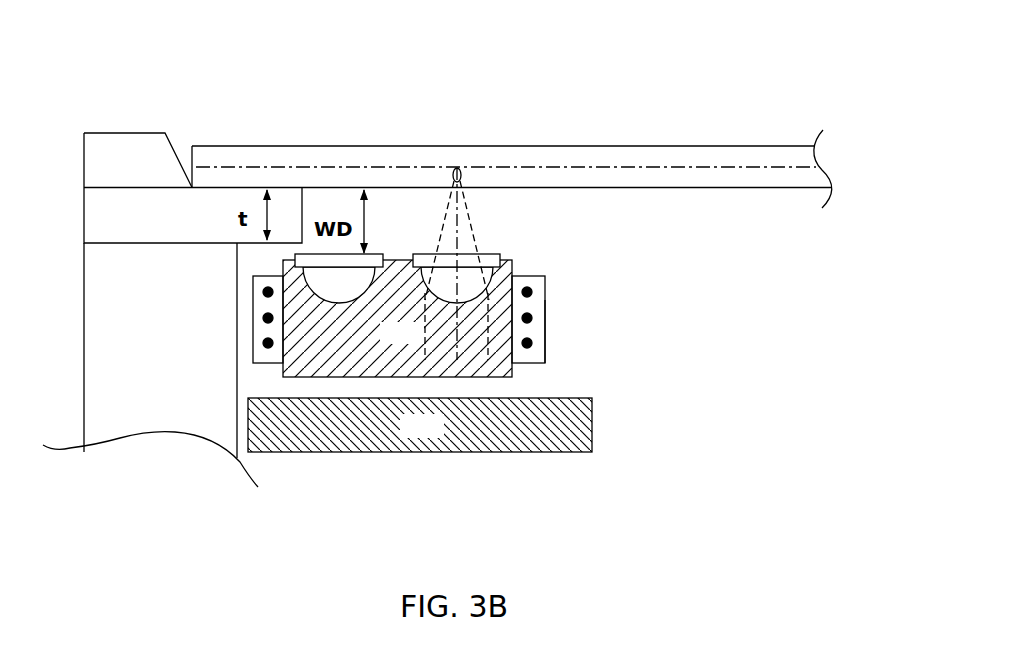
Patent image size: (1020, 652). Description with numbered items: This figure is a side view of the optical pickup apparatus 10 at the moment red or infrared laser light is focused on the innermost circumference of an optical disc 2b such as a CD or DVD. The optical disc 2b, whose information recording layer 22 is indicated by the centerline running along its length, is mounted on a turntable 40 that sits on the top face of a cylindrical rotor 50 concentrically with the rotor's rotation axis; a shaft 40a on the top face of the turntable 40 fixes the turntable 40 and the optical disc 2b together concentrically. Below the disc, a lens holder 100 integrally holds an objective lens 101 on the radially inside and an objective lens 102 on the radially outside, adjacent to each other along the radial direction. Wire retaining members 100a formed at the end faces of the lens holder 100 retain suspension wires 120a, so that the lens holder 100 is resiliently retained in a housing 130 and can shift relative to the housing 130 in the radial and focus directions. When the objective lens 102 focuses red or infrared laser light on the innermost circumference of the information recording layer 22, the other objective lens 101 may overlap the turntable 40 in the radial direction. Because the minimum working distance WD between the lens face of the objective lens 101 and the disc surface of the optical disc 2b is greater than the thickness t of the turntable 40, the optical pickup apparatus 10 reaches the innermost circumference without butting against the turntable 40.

The optical disc 2b is at (218, 146).
The information recording layer 22 is at (596, 162).
The shaft 40a is at (125, 133).
The turntable 40 is at (178, 230).
The rotor 50 is at (172, 358).
The lens holder 100 is at (421, 345).
The objective lens 101 is at (357, 295).
The objective lens 102 is at (476, 295).
The suspension wires 120a is at (528, 288).
The wire retaining members 100a is at (545, 326).
The housing 130 is at (441, 437).
The optical pickup apparatus 10 is at (608, 389).